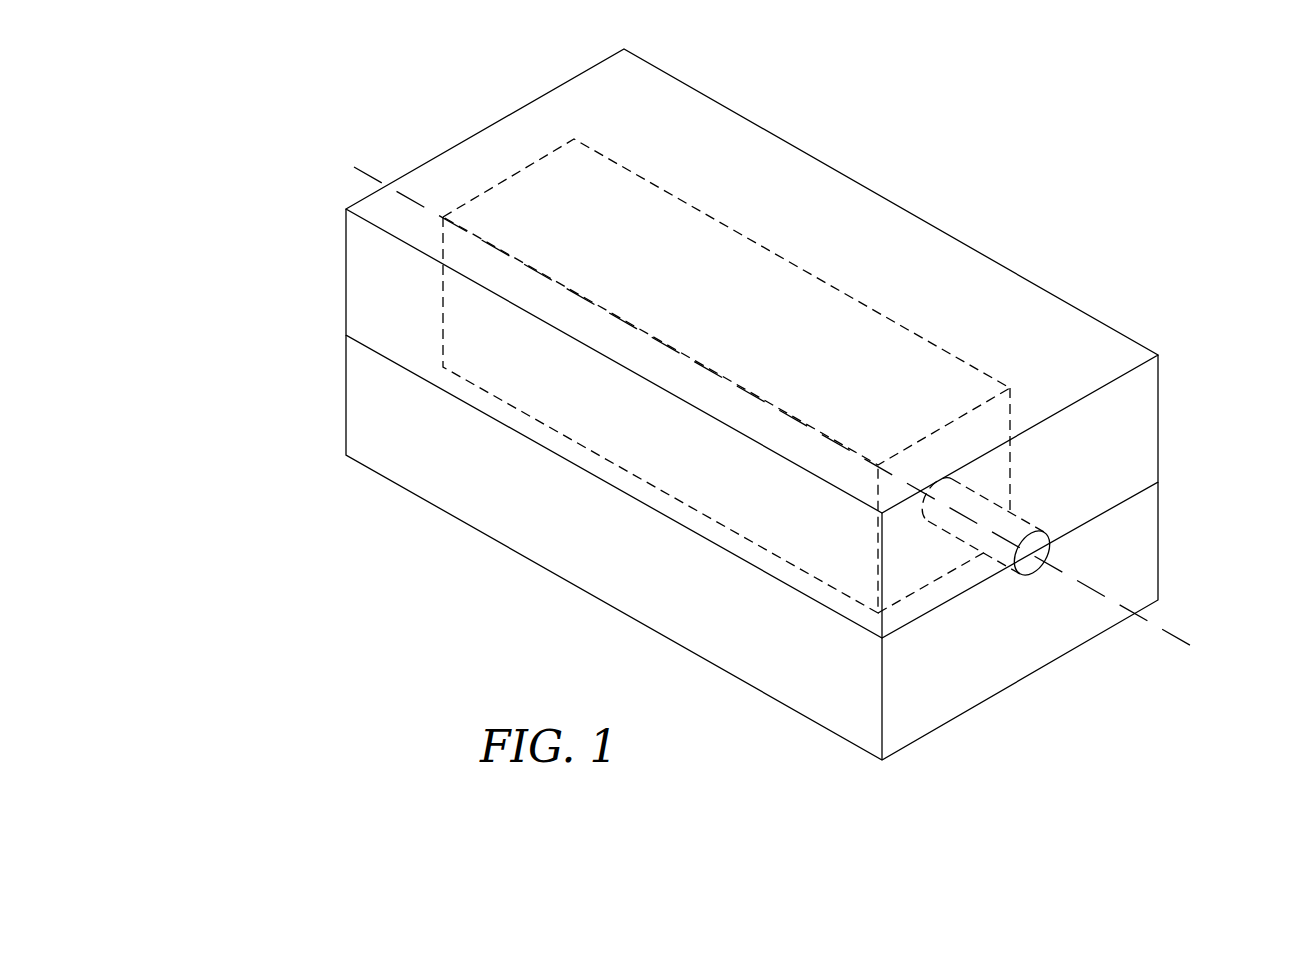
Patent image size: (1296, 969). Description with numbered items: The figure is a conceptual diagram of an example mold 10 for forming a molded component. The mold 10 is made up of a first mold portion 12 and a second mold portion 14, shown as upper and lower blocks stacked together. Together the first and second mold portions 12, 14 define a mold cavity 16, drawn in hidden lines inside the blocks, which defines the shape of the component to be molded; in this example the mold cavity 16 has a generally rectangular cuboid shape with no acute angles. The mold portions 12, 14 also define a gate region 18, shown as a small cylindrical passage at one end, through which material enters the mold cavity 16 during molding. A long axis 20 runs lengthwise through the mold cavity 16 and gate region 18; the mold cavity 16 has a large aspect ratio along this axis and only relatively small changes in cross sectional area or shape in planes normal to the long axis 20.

The mold 10 is at (227, 114).
The first mold portion 12 is at (363, 306).
The second mold portion 14 is at (363, 438).
The mold cavity 16 is at (833, 338).
The gate region 18 is at (995, 564).
The long axis 20 is at (1192, 639).